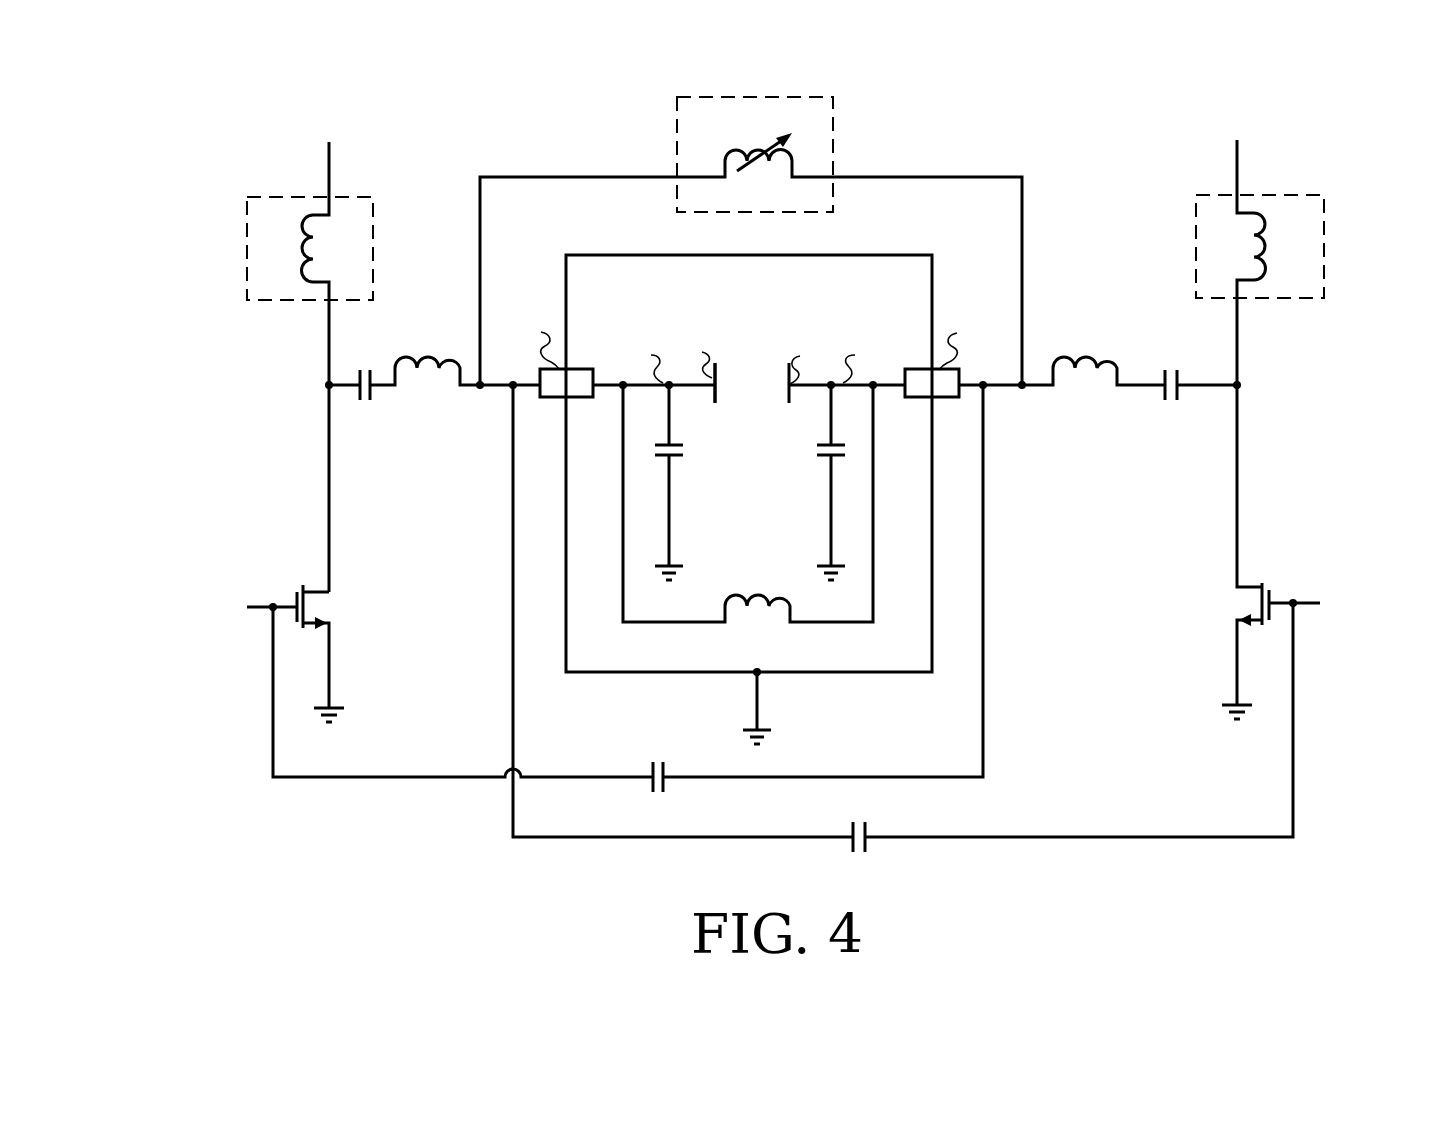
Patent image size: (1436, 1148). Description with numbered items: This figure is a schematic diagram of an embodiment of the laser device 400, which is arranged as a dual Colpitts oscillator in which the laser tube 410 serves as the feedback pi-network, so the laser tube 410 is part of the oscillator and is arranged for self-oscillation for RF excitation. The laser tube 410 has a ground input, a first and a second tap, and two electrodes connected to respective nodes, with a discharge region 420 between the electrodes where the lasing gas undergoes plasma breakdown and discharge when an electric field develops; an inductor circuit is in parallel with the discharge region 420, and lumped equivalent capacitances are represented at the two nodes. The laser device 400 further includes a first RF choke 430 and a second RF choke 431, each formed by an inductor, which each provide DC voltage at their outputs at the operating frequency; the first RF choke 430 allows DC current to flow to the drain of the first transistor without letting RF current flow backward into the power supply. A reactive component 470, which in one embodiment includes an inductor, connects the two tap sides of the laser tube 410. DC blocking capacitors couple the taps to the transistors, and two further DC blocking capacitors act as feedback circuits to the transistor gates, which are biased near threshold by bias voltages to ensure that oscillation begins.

The laser device 400 is at (718, 63).
The laser tube 410 is at (845, 255).
The discharge region 420 is at (742, 339).
The RF choke 430 is at (292, 223).
The RF choke 431 is at (1317, 223).
The reactive component 470 is at (730, 125).